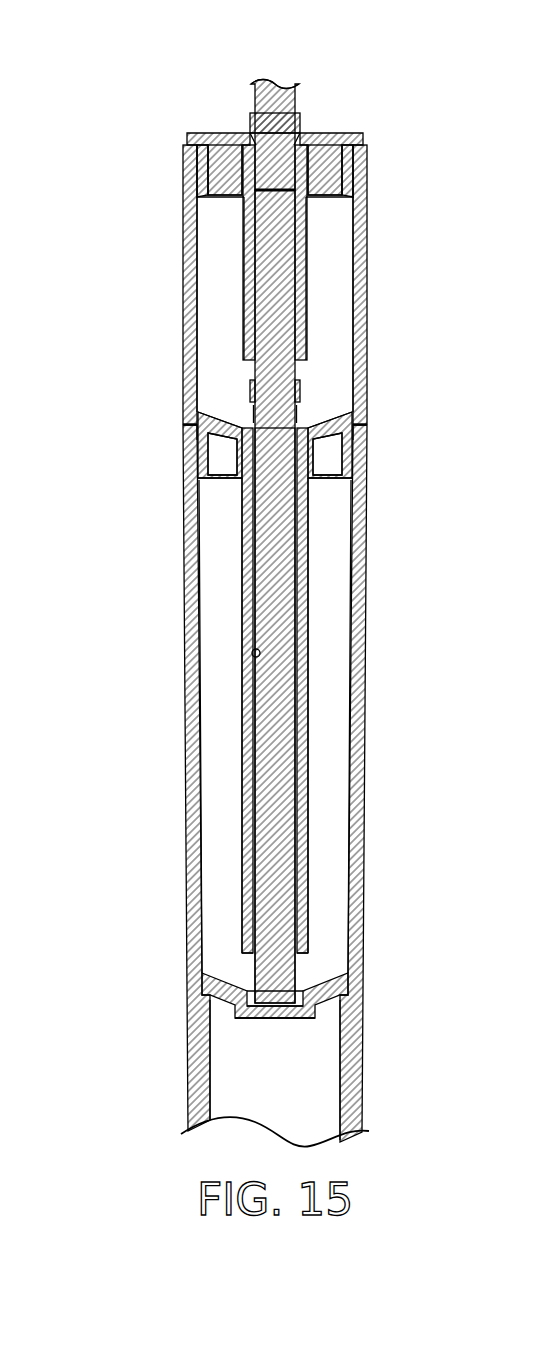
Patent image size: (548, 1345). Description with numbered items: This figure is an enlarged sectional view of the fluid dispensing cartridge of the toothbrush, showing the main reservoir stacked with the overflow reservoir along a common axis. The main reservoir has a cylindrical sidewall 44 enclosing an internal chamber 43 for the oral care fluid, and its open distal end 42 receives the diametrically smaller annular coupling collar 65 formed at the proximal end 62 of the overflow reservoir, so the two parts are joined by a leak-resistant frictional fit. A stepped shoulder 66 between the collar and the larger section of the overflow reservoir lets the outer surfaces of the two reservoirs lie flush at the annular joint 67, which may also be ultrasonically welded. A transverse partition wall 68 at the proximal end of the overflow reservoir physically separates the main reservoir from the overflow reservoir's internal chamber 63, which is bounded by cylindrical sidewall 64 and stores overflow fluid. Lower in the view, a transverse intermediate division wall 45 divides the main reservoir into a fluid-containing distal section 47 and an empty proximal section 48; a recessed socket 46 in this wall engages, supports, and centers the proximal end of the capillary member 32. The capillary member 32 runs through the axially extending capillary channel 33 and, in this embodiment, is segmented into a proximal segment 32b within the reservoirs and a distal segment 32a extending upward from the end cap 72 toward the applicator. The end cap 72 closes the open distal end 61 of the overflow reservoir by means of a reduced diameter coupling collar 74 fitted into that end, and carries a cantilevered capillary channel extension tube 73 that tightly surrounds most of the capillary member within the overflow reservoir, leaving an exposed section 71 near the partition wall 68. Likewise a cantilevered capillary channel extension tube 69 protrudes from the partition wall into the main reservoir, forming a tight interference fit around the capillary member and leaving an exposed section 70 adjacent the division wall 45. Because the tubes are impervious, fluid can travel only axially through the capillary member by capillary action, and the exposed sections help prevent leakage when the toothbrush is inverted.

The capillary member 32 is at (283, 670).
The distal segment 32a is at (263, 100).
The proximal segment 32b is at (278, 592).
The capillary channel 33 is at (252, 657).
The distal end 42 is at (363, 424).
The internal chamber 43 is at (217, 771).
The cylindrical sidewall 44 is at (366, 769).
The intermediate division wall 45 is at (218, 973).
The recessed socket 46 is at (271, 1007).
The distal section 47 is at (329, 848).
The proximal section 48 is at (314, 1063).
The distal end 61 is at (373, 132).
The proximal end 62 is at (222, 480).
The internal chamber 63 is at (338, 262).
The cylindrical sidewall 64 is at (367, 297).
The annular coupling collar 65 is at (205, 448).
The shoulder 66 is at (190, 432).
The joint 67 is at (376, 428).
The partition wall 68 is at (230, 420).
The capillary channel extension tube 69 is at (243, 610).
The exposed section 70 is at (318, 963).
The exposed section 71 is at (315, 378).
The end cap 72 is at (327, 130).
The capillary channel extension tube 73 is at (245, 290).
The coupling collar 74 is at (193, 173).